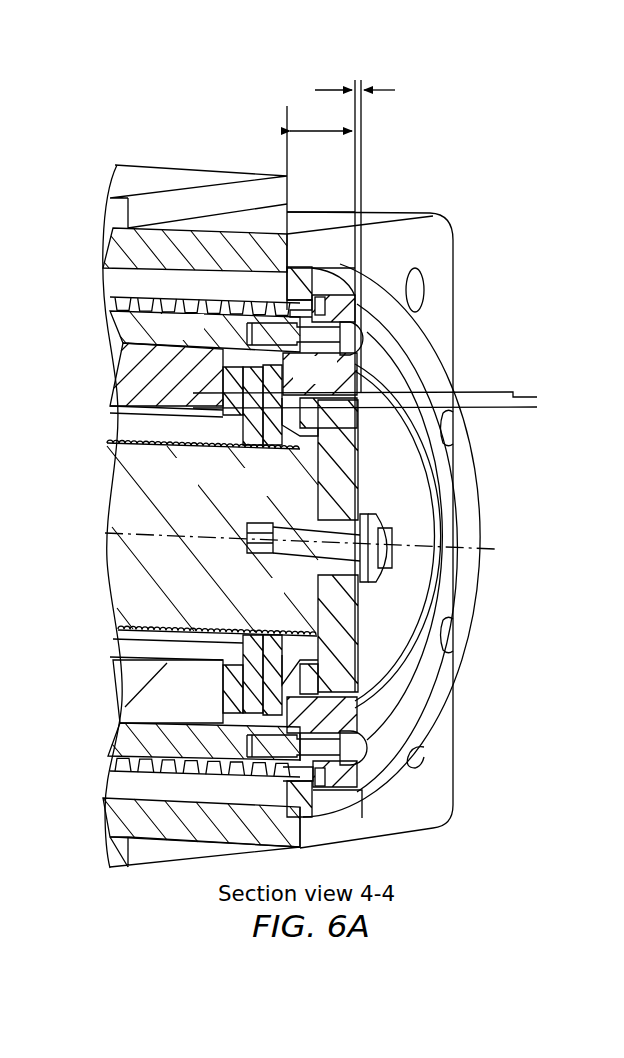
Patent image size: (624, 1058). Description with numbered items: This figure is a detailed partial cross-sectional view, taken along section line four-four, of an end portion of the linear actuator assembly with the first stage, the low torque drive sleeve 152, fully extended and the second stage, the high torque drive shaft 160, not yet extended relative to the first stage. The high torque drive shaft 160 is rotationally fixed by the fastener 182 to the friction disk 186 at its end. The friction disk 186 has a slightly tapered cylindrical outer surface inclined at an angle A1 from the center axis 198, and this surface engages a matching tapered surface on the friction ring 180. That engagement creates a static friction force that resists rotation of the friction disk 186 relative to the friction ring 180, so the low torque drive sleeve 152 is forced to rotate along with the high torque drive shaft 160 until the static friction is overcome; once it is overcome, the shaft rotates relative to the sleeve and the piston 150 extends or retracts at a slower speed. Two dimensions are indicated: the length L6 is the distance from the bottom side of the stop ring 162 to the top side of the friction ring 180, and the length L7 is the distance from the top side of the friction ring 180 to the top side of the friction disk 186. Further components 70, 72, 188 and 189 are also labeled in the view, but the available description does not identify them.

The piston 150 is at (247, 212).
The low torque drive sleeve 152 is at (201, 341).
The high torque drive shaft 160 is at (193, 486).
The stop ring 162 is at (300, 268).
The friction ring 180 is at (334, 382).
The fastener 182 is at (285, 528).
The friction disk 186 is at (406, 633).
The retainer 188 is at (283, 630).
The lower fastener 189 is at (340, 694).
The flange 70 is at (472, 392).
The groove 72 is at (375, 400).
The center axis 198 is at (478, 550).
The angle A1 is at (540, 400).
The length L6 is at (313, 131).
The length L7 is at (390, 91).